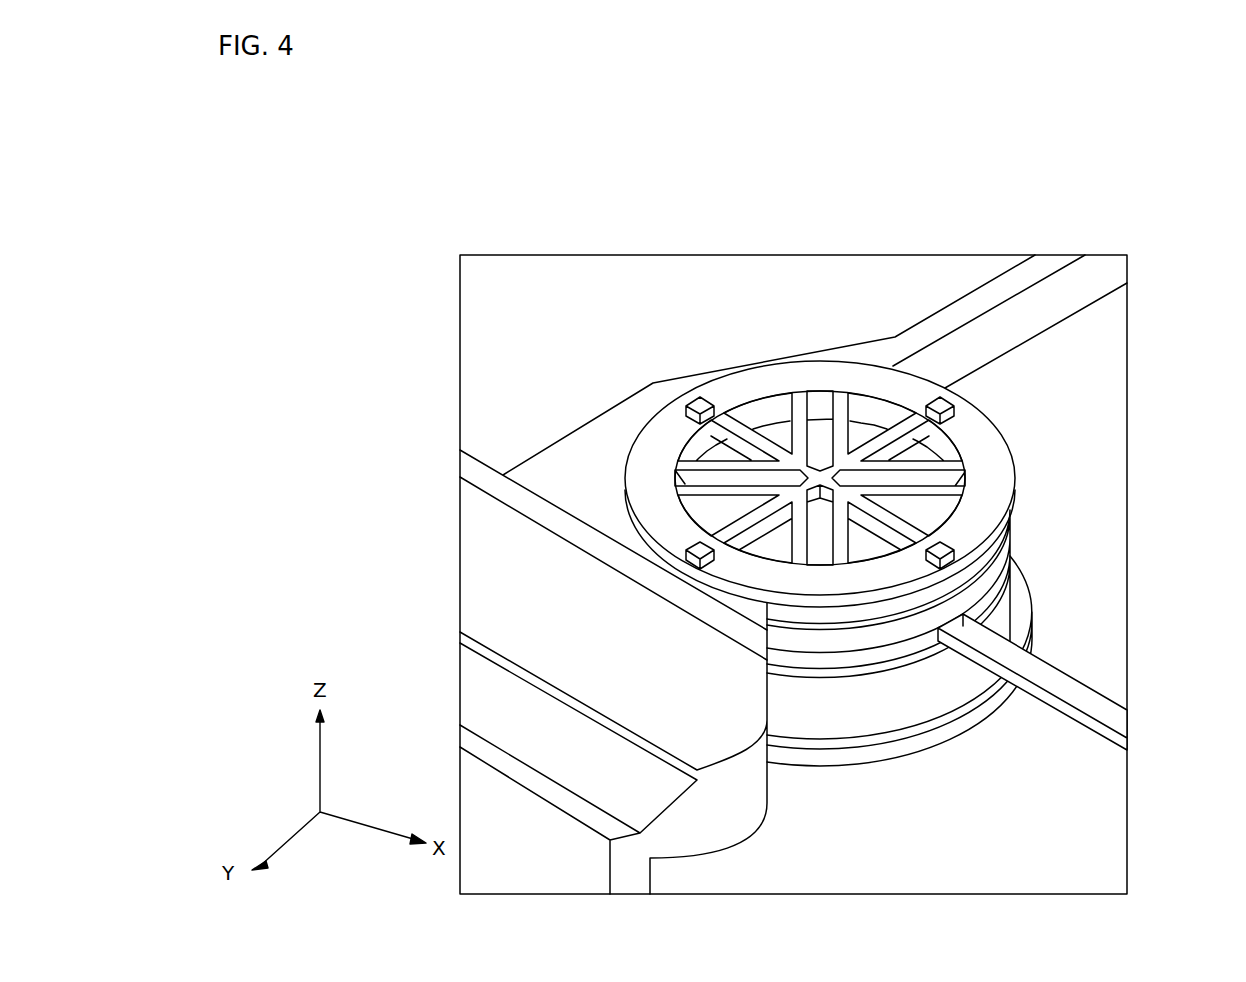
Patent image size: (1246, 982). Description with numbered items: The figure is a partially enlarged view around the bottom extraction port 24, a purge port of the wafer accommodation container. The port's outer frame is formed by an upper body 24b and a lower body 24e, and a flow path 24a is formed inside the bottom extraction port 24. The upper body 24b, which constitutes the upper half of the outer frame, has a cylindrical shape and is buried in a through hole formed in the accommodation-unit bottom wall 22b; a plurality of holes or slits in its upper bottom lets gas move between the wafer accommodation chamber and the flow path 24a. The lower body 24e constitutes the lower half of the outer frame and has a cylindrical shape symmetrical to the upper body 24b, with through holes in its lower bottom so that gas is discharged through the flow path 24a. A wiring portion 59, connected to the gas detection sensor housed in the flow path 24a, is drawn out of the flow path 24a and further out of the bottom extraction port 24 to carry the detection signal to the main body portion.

The accommodation-unit bottom wall 22b is at (598, 432).
The bottom extraction port 24 is at (1003, 398).
The flow path 24a is at (866, 432).
The upper body 24b is at (1002, 460).
The lower body 24e is at (912, 707).
The wiring portion 59 is at (1053, 680).